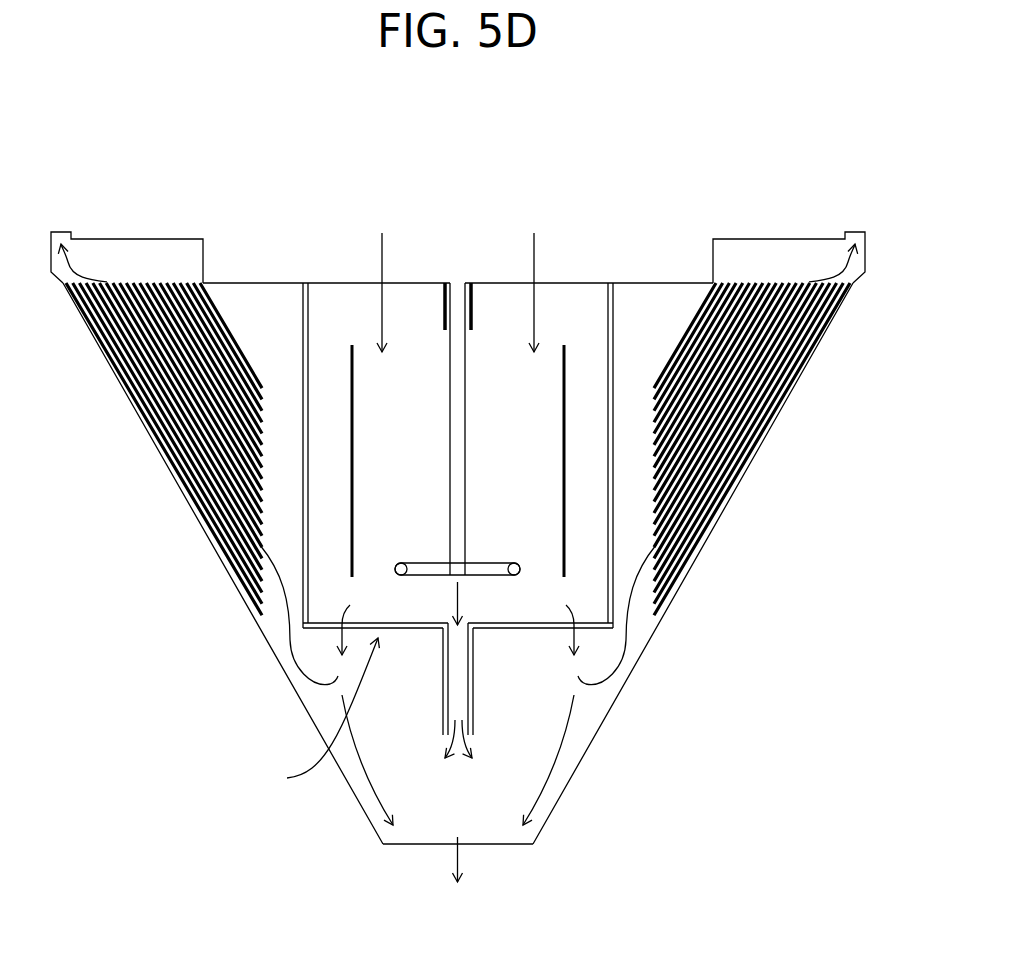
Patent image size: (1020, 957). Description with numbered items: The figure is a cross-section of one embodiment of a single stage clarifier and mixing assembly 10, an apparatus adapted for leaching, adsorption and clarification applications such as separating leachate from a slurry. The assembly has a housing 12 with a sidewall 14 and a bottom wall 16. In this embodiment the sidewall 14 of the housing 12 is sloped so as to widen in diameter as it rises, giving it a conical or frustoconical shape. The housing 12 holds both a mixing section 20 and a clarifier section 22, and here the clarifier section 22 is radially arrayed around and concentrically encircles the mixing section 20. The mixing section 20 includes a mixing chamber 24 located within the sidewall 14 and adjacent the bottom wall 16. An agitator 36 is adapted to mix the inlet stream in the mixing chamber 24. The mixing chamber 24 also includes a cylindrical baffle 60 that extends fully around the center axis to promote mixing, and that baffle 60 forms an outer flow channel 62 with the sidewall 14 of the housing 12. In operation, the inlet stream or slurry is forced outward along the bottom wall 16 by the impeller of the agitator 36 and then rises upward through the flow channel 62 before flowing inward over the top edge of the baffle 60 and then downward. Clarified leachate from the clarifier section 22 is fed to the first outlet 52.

The single stage clarifier and mixing assembly 10 is at (673, 190).
The housing 12 is at (855, 283).
The sidewall 14 is at (657, 615).
The bottom wall 16 is at (408, 845).
The mixing section 20 is at (454, 685).
The clarifier section 22 is at (158, 500).
The mixing chamber 24 is at (415, 508).
The agitator 36 is at (500, 550).
The first outlet 52 is at (63, 232).
The cylindrical baffle 60 is at (352, 403).
The outer flow channel 62 is at (493, 845).